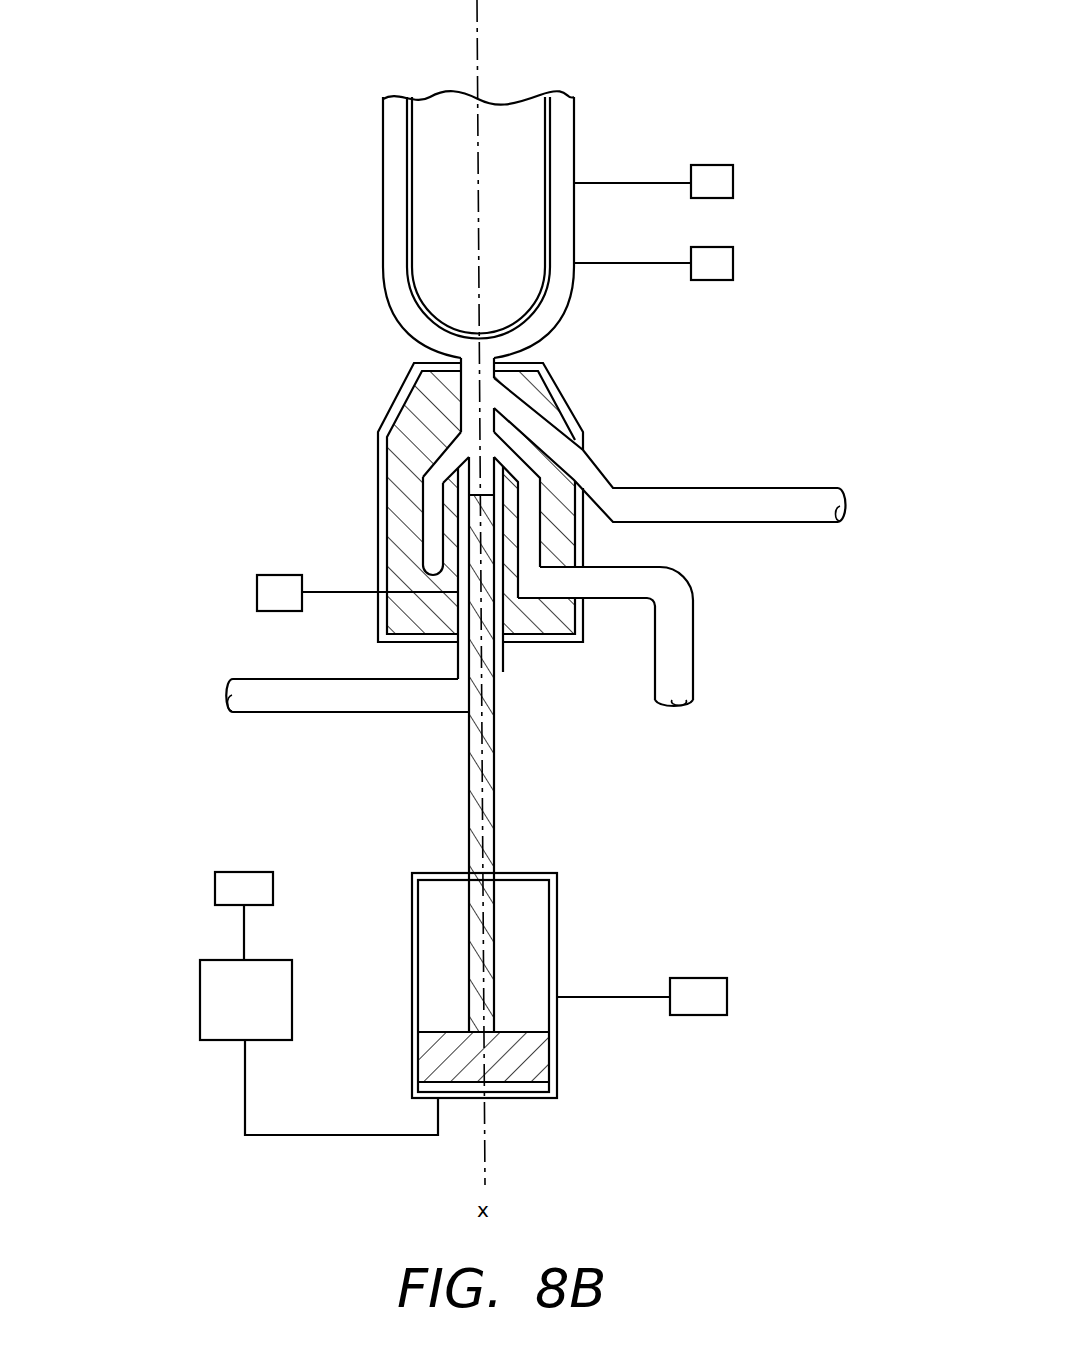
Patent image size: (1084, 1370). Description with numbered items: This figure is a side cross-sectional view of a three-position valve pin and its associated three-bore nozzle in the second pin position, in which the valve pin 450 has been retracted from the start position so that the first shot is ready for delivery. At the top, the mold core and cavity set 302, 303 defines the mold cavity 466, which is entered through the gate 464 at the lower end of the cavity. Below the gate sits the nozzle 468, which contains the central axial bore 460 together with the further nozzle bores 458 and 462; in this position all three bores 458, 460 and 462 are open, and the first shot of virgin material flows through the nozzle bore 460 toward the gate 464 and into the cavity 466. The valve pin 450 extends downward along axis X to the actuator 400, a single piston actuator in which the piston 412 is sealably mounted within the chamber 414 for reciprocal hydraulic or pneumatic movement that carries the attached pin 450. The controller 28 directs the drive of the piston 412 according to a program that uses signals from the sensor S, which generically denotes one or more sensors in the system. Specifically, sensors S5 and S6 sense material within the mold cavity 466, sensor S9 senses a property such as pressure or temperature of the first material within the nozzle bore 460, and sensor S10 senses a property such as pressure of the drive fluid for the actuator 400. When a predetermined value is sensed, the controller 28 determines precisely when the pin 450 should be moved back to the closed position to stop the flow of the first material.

The mold core 302 is at (496, 116).
The mold cavity set member 303 is at (668, 237).
The mold cavity 466 is at (555, 145).
The gate 464 is at (466, 356).
The nozzle 468 is at (392, 396).
The nozzle bore 462 is at (557, 424).
The nozzle bore 458 is at (398, 509).
The central axial bore 460 is at (503, 672).
The valve pin 450 is at (497, 800).
The actuator 400 is at (518, 961).
The chamber 414 is at (531, 976).
The piston 412 is at (452, 1030).
The controller 28 is at (203, 962).
The sensor S is at (244, 916).
The sensor S5 is at (654, 263).
The sensor S6 is at (654, 181).
The sensor S9 is at (357, 593).
The sensor S10 is at (642, 996).